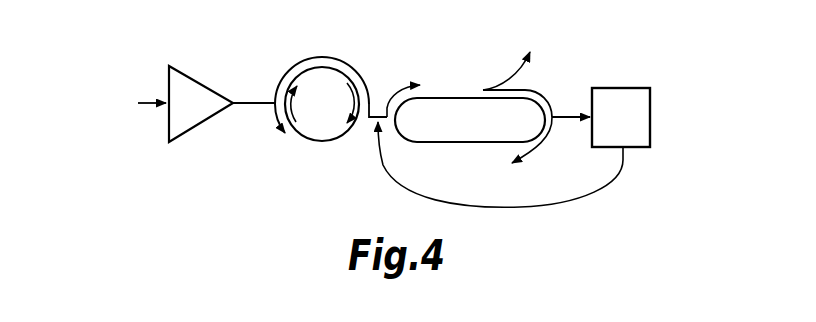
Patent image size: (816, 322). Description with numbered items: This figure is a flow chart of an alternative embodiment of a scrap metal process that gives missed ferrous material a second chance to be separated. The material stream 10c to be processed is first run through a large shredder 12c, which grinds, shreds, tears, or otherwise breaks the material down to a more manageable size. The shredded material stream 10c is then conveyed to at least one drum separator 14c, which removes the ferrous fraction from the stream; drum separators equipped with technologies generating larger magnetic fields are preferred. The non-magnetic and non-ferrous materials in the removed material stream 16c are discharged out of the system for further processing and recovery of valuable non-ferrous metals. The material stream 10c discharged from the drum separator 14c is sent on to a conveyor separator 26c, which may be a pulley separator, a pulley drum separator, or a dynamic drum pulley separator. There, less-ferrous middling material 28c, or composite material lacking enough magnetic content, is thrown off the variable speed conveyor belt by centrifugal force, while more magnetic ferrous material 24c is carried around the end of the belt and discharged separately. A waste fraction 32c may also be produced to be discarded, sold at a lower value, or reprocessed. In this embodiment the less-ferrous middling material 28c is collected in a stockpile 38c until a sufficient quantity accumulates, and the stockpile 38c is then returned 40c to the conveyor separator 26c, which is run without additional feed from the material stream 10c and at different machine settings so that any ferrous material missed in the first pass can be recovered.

The material stream 10c is at (365, 47).
The shredder 12c is at (195, 112).
The drum separator 14c is at (328, 128).
The removed material stream 16c is at (295, 136).
The ferrous material 24c is at (509, 151).
The conveyor separator 26c is at (441, 110).
The less-ferrous middling material 28c is at (566, 116).
The waste material 32c is at (516, 57).
The stockpile 38c is at (622, 88).
The return 40c is at (619, 181).